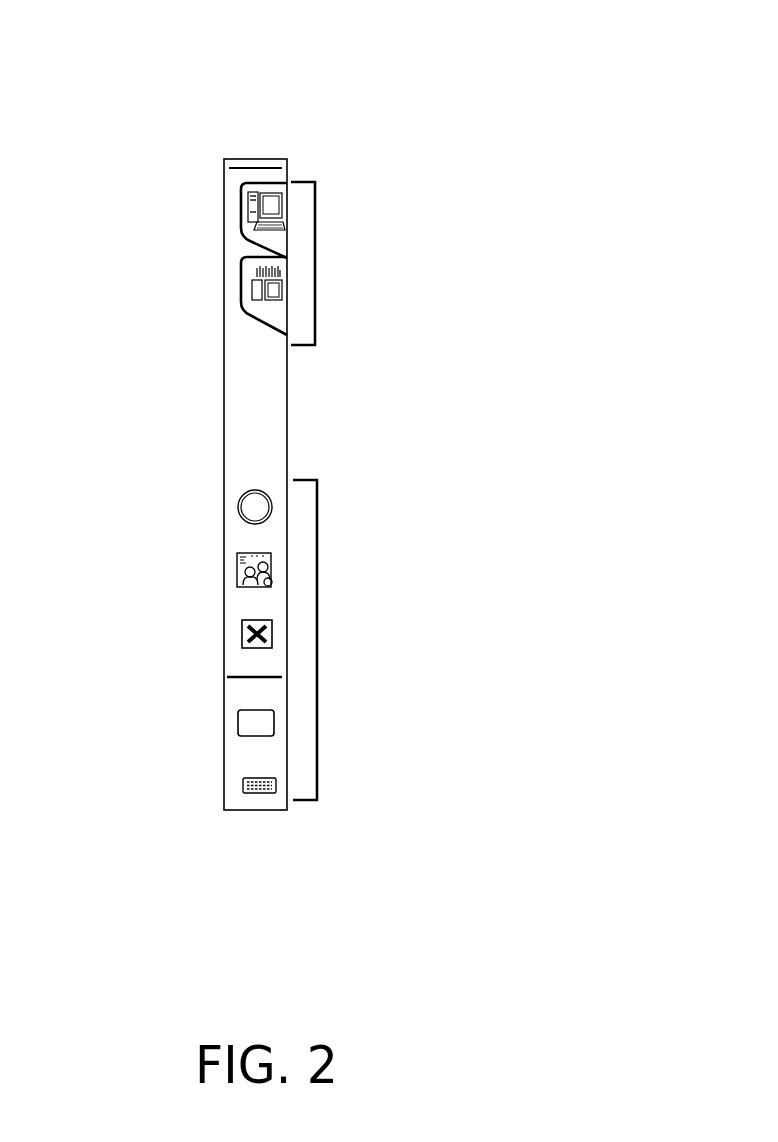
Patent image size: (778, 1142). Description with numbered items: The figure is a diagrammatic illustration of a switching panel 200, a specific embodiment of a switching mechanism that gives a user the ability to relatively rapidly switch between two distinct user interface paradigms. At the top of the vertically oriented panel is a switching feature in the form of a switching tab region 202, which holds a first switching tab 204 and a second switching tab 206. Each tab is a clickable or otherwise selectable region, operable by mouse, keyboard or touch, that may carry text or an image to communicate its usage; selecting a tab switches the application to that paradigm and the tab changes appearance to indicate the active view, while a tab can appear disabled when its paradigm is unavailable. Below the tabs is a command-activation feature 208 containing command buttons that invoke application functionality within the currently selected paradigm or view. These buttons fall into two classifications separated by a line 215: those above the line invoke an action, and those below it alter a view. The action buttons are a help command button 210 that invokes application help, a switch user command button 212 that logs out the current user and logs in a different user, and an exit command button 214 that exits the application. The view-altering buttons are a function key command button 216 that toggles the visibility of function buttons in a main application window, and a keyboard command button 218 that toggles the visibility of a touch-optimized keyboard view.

The switching panel 200 is at (341, 87).
The switching tab region 202 is at (350, 244).
The first switching tab 204 is at (245, 218).
The second switching tab 206 is at (245, 297).
The command-activation feature 208 is at (309, 644).
The help command button 210 is at (237, 508).
The switch user command button 212 is at (237, 573).
The exit command button 214 is at (242, 646).
The line 215 is at (228, 678).
The function key command button 216 is at (237, 722).
The keyboard command button 218 is at (243, 785).